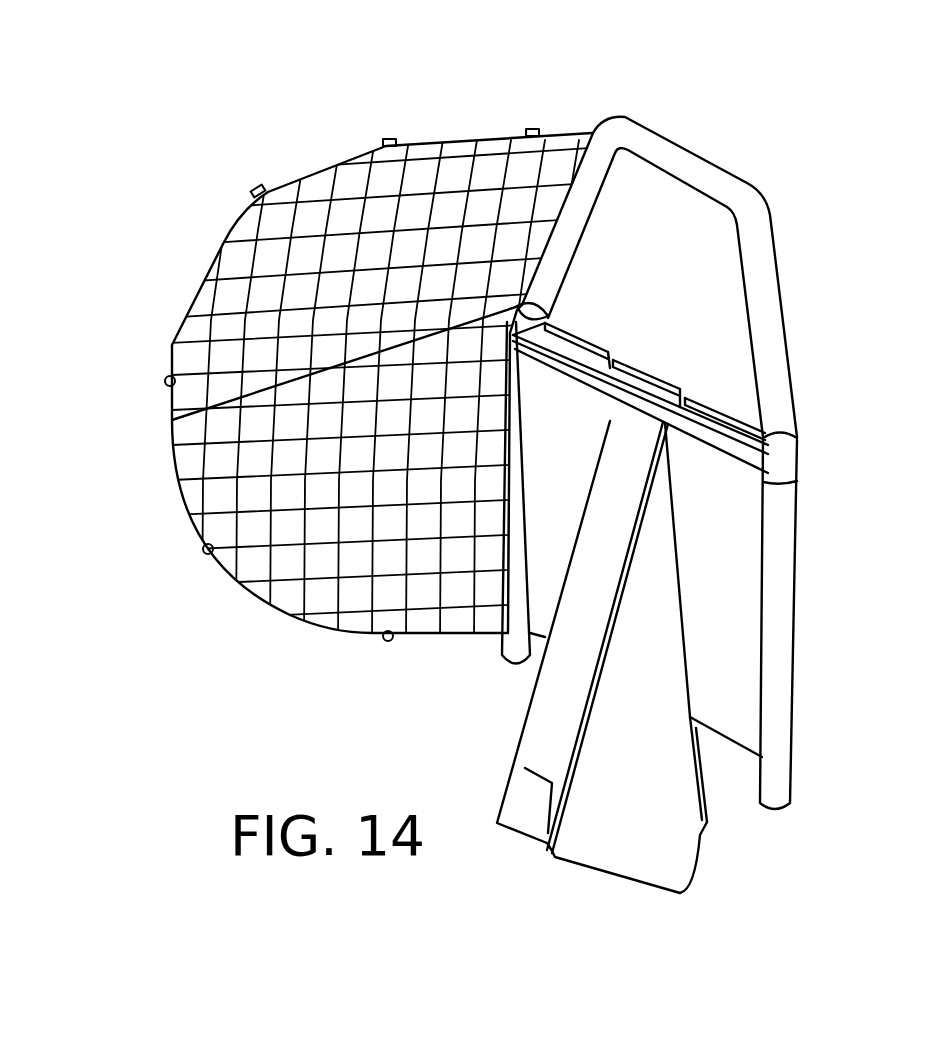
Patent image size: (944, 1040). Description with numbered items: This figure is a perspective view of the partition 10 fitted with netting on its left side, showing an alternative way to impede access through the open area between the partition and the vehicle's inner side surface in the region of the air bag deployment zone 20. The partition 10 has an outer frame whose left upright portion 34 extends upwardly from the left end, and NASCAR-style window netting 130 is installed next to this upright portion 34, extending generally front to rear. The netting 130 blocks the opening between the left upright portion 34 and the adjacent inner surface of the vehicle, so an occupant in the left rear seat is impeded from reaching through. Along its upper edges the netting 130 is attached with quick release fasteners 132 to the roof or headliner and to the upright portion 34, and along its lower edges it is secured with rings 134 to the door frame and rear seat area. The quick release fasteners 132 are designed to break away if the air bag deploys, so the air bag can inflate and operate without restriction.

The partition 10 is at (696, 505).
The air bag deployment zone 20 is at (214, 192).
The left upright portion 34 is at (572, 243).
The netting 130 is at (168, 357).
The quick release fasteners 132 is at (258, 190).
The rings 134 is at (166, 381).